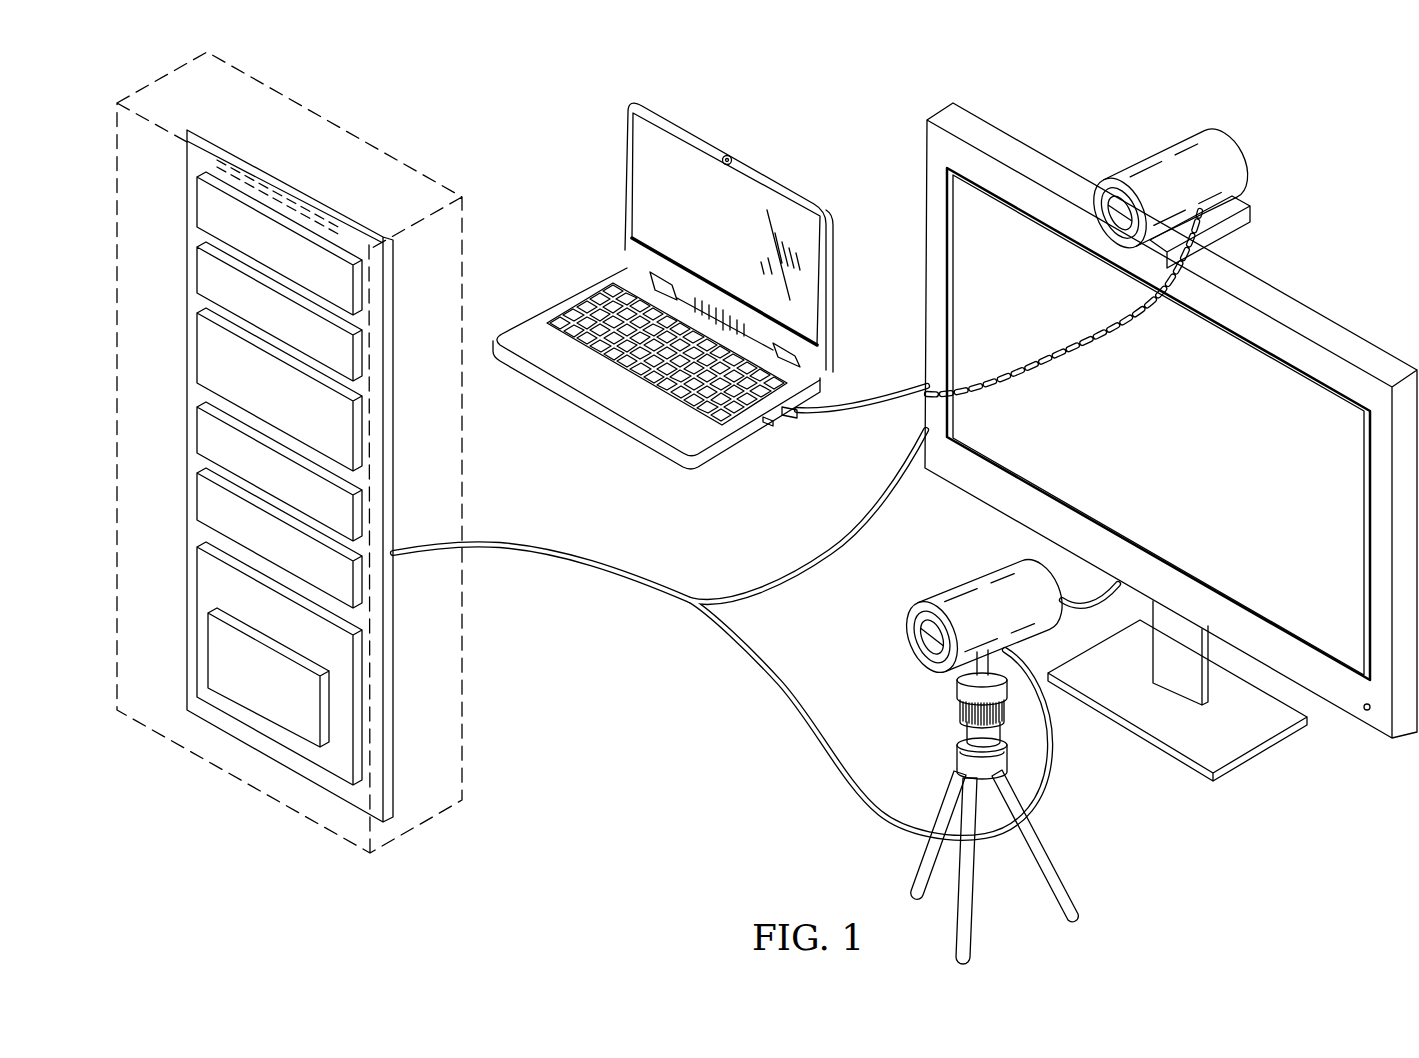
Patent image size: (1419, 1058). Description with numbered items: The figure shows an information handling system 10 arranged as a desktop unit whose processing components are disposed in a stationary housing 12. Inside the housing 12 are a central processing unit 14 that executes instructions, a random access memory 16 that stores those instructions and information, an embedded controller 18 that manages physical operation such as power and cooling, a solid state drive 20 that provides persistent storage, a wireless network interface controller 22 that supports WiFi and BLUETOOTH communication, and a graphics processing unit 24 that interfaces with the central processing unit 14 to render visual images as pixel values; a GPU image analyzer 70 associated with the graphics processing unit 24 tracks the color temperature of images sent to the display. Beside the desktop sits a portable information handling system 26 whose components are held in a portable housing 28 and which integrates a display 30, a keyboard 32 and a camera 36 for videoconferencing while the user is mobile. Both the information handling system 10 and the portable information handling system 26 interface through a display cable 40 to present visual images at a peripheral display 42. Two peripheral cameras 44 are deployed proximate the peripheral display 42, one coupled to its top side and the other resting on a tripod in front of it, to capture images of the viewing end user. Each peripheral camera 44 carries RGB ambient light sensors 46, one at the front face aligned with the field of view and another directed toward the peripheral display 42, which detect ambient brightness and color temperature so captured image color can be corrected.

The information handling system 10 is at (345, 506).
The housing 12 is at (197, 773).
The central processing unit 14 is at (203, 204).
The random access memory 16 is at (203, 273).
The embedded controller 18 is at (203, 344).
The solid state drive 20 is at (203, 434).
The wireless network interface controller 22 is at (203, 503).
The graphics processing unit 24 is at (203, 608).
The GPU image analyzer 70 is at (208, 650).
The portable information handling system 26 is at (651, 283).
The portable housing 28 is at (580, 422).
The display 30 is at (787, 216).
The keyboard 32 is at (578, 300).
The camera 36 is at (725, 166).
The display cable 40 is at (813, 420).
The peripheral display 42 is at (1329, 300).
The peripheral camera 44 is at (952, 556).
The RGB ambient light sensor 46 is at (927, 604).